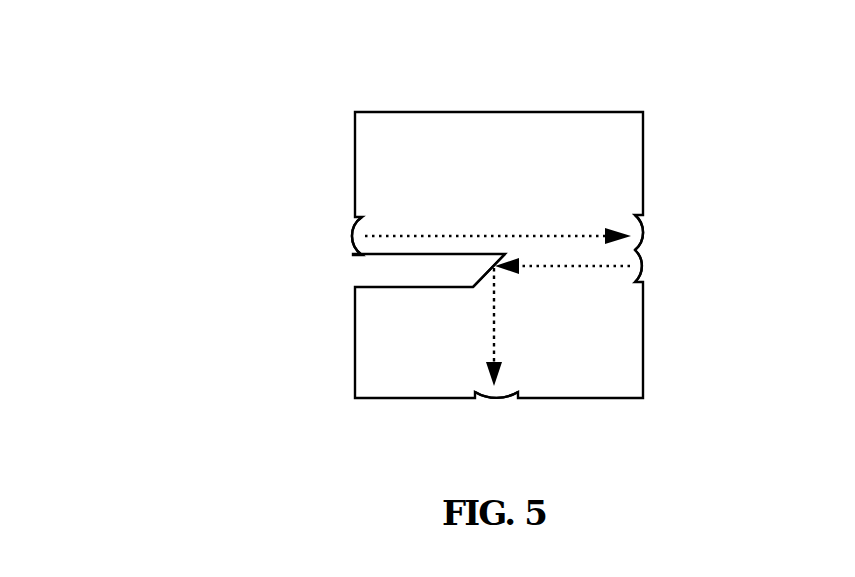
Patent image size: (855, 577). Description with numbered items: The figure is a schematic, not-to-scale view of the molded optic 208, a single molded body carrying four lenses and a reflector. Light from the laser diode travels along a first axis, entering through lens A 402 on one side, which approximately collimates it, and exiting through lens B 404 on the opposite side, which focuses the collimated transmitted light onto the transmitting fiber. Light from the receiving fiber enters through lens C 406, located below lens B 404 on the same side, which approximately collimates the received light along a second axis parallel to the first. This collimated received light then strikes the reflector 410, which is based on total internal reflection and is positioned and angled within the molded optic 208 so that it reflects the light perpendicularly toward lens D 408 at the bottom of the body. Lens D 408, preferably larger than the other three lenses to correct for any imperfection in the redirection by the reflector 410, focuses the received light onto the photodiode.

The molded optic 208 is at (205, 135).
The lens A 402 is at (342, 238).
The lens B 404 is at (648, 228).
The lens C 406 is at (648, 273).
The lens D 408 is at (505, 402).
The reflector 410 is at (442, 268).